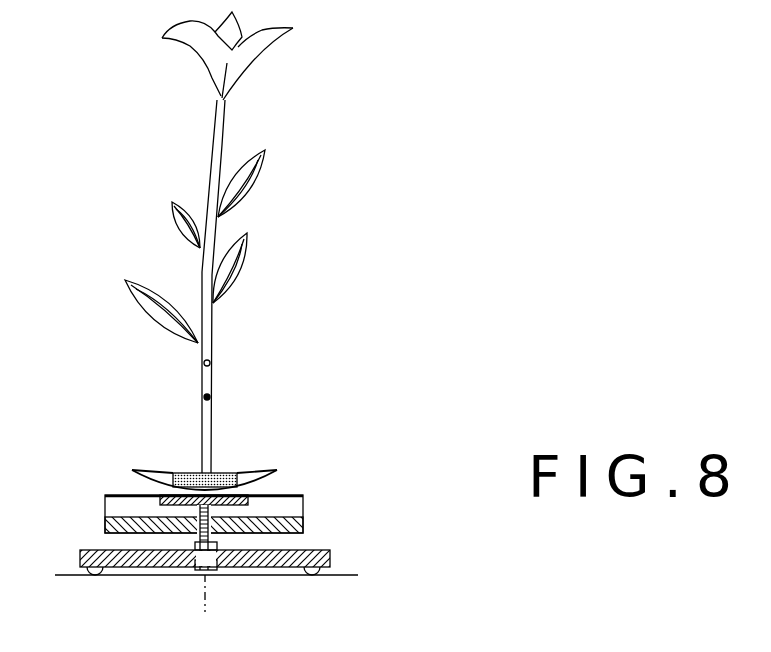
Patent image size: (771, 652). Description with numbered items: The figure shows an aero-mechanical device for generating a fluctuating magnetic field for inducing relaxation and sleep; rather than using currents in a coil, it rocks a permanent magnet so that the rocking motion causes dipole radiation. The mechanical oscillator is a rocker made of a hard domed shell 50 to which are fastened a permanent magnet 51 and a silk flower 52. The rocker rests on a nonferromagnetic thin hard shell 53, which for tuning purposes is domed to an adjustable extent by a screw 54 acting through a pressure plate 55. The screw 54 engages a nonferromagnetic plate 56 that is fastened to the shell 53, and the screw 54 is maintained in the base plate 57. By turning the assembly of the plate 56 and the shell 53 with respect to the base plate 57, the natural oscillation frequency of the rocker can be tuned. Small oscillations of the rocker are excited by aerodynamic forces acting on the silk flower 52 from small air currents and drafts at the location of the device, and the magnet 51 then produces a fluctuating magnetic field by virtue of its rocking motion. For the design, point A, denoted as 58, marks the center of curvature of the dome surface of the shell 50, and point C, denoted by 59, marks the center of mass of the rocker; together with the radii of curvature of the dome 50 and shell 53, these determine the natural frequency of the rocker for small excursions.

The hard domed shell 50 is at (282, 480).
The permanent magnet 51 is at (268, 482).
The silk flower 52 is at (237, 108).
The nonferromagnetic thin hard shell 53 is at (130, 493).
The screw 54 is at (212, 537).
The pressure plate 55 is at (257, 507).
The nonferromagnetic plate 56 is at (308, 530).
The base plate 57 is at (94, 545).
The point A 58 is at (197, 362).
The point C 59 is at (213, 395).